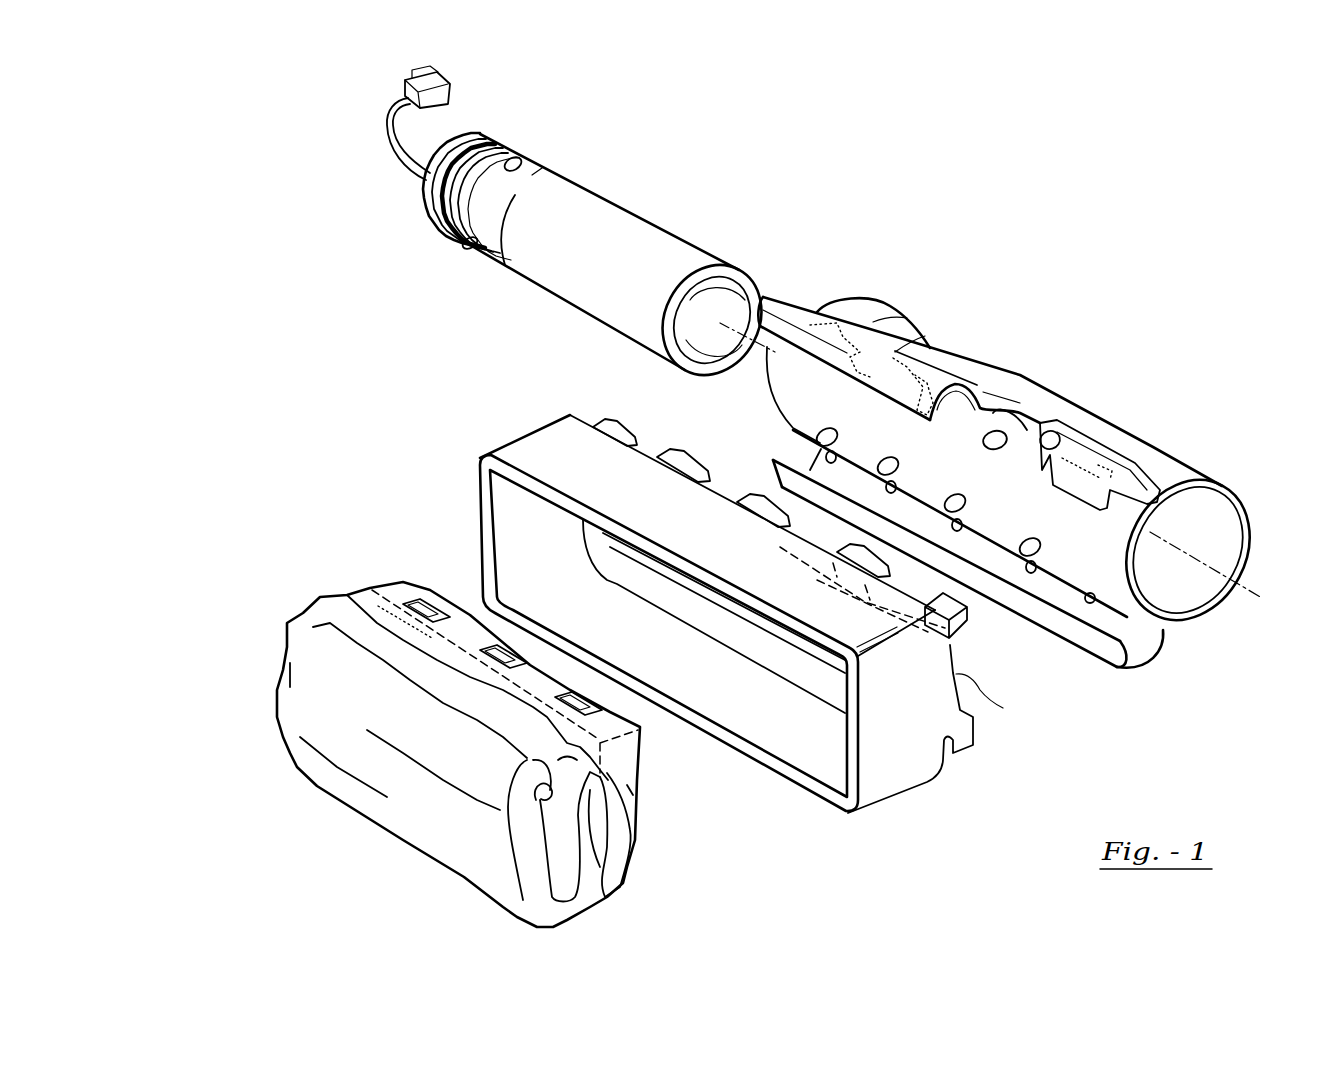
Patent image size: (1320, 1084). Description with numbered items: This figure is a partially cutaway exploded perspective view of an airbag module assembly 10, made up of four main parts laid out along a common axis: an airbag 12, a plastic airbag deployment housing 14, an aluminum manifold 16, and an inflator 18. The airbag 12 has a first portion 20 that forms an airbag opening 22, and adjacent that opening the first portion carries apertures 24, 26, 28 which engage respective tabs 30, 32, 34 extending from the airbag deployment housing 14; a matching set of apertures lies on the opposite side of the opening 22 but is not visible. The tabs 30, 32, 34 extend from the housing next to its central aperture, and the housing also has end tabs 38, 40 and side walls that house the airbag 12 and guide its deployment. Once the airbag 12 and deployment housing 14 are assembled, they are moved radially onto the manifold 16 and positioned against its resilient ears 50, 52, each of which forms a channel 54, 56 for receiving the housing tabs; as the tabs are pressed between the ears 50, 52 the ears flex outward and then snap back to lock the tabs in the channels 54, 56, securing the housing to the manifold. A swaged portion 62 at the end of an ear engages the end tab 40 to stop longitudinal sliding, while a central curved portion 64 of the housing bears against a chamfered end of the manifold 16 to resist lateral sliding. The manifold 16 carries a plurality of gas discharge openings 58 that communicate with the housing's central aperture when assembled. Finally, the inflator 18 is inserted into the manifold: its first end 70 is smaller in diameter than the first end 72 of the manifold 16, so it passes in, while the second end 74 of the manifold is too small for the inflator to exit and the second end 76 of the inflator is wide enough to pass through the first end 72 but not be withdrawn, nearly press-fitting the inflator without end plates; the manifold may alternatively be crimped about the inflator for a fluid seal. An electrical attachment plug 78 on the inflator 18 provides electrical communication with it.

The airbag module assembly 10 is at (358, 250).
The airbag 12 is at (460, 706).
The airbag deployment housing 14 is at (771, 596).
The manifold 16 is at (1030, 477).
The inflator 18 is at (583, 226).
The first portion 20 is at (620, 817).
The airbag opening 22 is at (402, 572).
The aperture 24 is at (417, 615).
The aperture 26 is at (480, 655).
The aperture 28 is at (533, 712).
The tab 30 is at (683, 458).
The tab 32 is at (773, 500).
The tab 34 is at (850, 556).
The end tab 38 is at (622, 428).
The end tab 40 is at (957, 620).
The ear 50 is at (932, 372).
The ear 52 is at (1097, 643).
The channel 54 is at (987, 387).
The channel 56 is at (1060, 590).
The gas discharge openings 58 is at (930, 372).
The swaged portion 62 is at (1202, 520).
The central curved portion 64 is at (1003, 708).
The first end of the inflator 70 is at (722, 250).
The first end of the manifold 72 is at (840, 303).
The second end of the manifold 74 is at (1210, 500).
The second end of the inflator 76 is at (438, 132).
The electrical attachment plug 78 is at (450, 90).